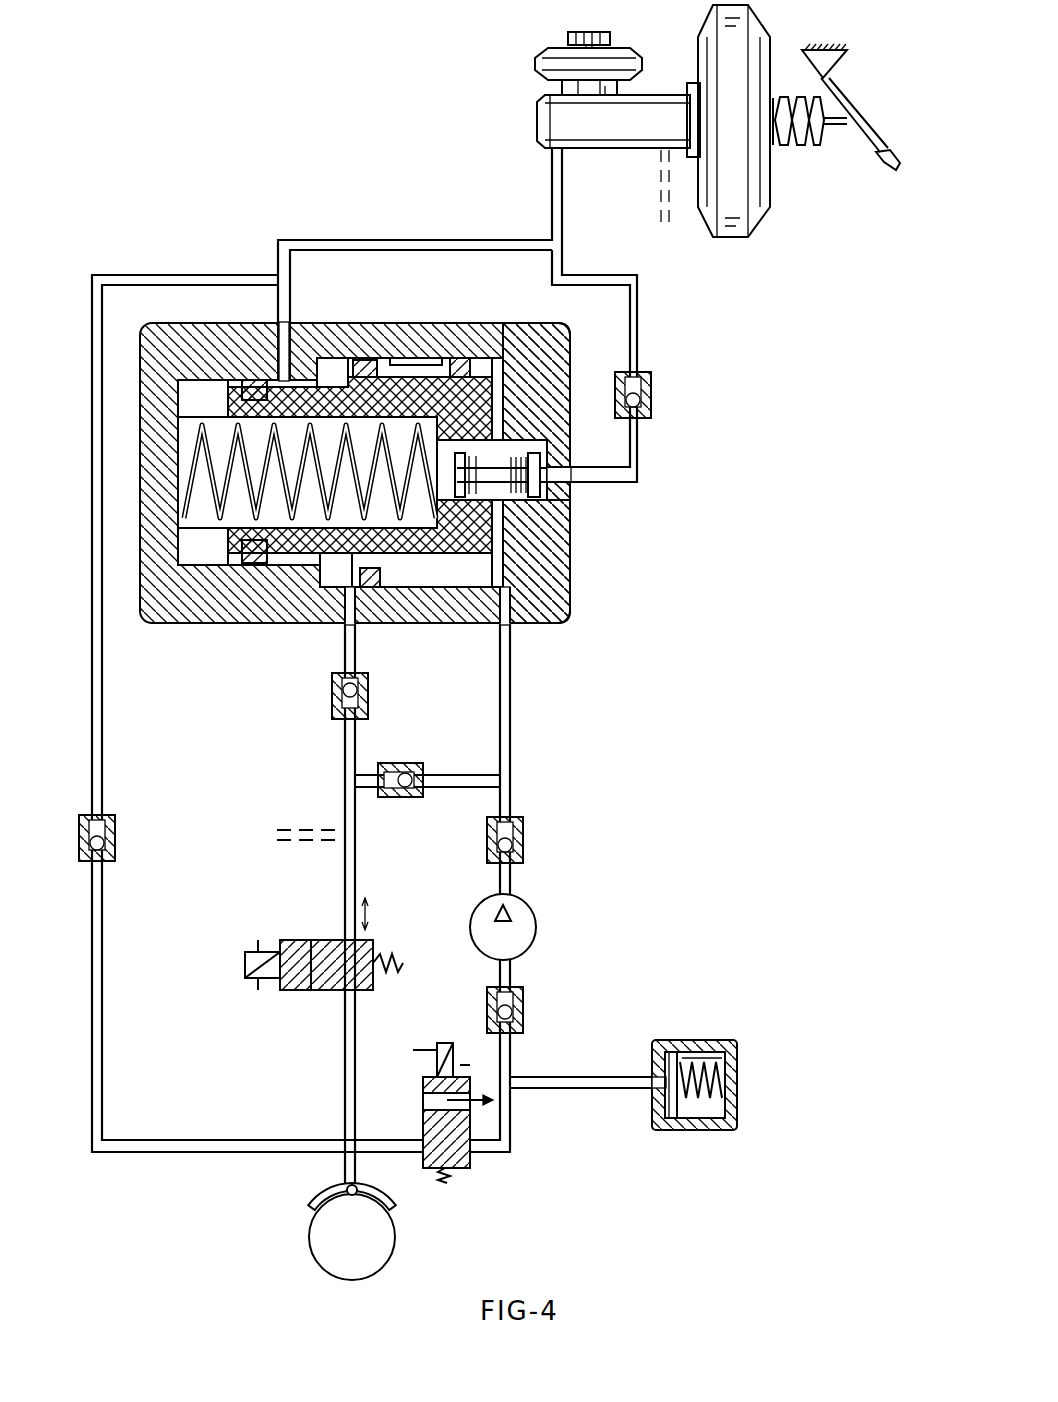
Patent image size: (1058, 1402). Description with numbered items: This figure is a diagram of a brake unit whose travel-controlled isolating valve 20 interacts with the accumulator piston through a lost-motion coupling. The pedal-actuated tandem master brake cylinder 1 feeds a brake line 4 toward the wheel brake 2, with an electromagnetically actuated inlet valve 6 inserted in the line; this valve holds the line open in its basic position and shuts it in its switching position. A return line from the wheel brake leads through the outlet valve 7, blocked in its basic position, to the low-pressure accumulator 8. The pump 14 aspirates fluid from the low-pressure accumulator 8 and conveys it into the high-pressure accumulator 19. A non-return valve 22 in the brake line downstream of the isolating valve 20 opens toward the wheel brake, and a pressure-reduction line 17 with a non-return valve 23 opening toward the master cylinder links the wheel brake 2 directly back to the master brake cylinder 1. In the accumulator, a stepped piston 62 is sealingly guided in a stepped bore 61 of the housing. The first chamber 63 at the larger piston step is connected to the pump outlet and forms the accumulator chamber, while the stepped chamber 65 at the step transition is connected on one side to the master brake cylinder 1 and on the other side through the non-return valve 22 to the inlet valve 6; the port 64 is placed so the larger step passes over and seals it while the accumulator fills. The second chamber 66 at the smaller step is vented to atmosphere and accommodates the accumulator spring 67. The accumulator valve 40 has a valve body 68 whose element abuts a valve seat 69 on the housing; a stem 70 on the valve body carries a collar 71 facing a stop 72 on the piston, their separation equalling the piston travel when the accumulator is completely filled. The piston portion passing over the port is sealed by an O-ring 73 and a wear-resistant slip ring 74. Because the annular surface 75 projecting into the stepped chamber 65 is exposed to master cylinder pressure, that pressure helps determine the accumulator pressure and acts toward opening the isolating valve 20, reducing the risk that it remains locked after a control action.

The tandem master brake cylinder 1 is at (548, 120).
The front wheel brake 2 is at (315, 1228).
The brake line 4 is at (552, 205).
The inlet valve 6 is at (310, 992).
The outlet valve 7 is at (471, 1166).
The low-pressure accumulator 8 is at (685, 1040).
The pump 14 is at (537, 913).
The pressure-reduction line 17 is at (102, 750).
The high-pressure accumulator 19 is at (510, 350).
The isolating valve 20 is at (395, 626).
The non-return valve 22 is at (332, 709).
The non-return valve 23 is at (115, 848).
The accumulator valve 40 is at (412, 498).
The stepped bore 61 is at (335, 578).
The stepped piston 62 is at (290, 552).
The first chamber 63 is at (563, 575).
The port 64 is at (368, 600).
The stepped chamber 65 is at (332, 572).
The second chamber 66 is at (200, 545).
The accumulator spring 67 is at (200, 524).
The valve body 68 is at (537, 463).
The valve seat 69 is at (558, 456).
The stem 70 is at (520, 535).
The collar 71 is at (467, 450).
The stop 72 is at (527, 417).
The O-ring 73 is at (385, 358).
The slip ring 74 is at (366, 360).
The annular surface 75 is at (335, 360).